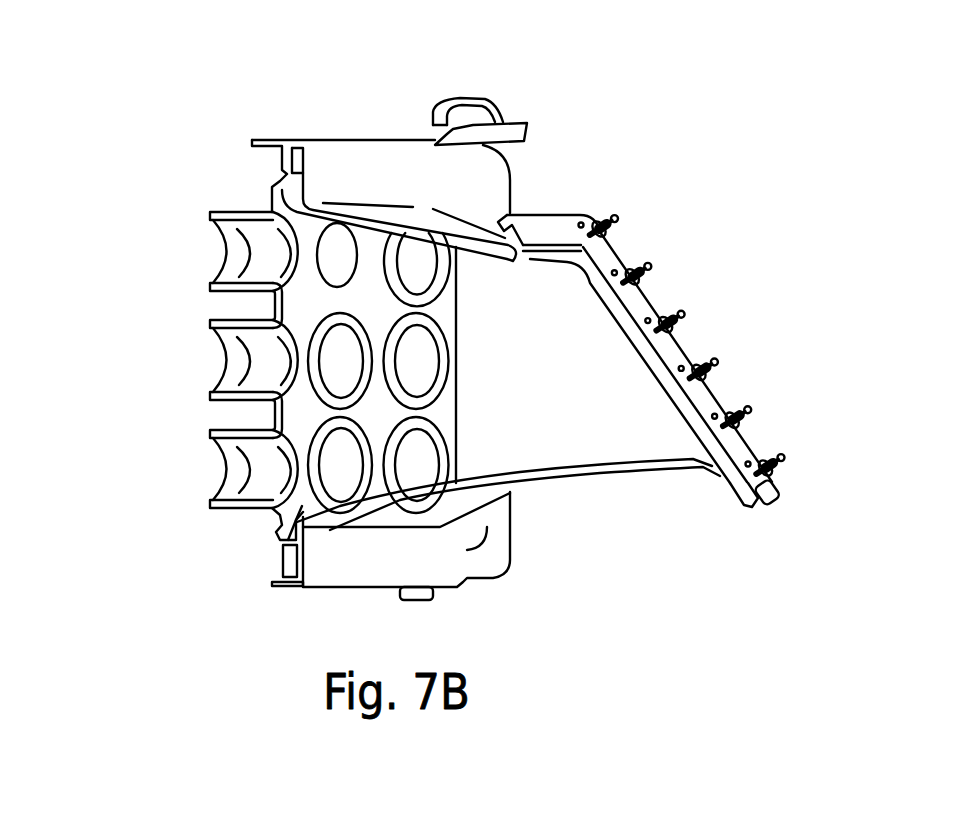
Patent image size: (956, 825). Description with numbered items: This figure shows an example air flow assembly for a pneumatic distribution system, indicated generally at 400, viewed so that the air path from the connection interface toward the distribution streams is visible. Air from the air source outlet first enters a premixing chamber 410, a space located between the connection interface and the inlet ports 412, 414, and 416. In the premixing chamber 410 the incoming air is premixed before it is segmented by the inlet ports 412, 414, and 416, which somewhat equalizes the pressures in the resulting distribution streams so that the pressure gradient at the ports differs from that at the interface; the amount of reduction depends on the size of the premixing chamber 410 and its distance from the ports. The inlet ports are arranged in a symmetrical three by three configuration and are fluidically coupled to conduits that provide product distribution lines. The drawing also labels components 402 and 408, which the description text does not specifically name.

The engine assembly 400 is at (597, 103).
The cylinder head 402 is at (493, 492).
The fuel injector 408 is at (629, 313).
The premixing chamber 410 is at (522, 338).
The inlet port 412 is at (338, 496).
The inlet port 414 is at (457, 390).
The inlet port 416 is at (503, 260).